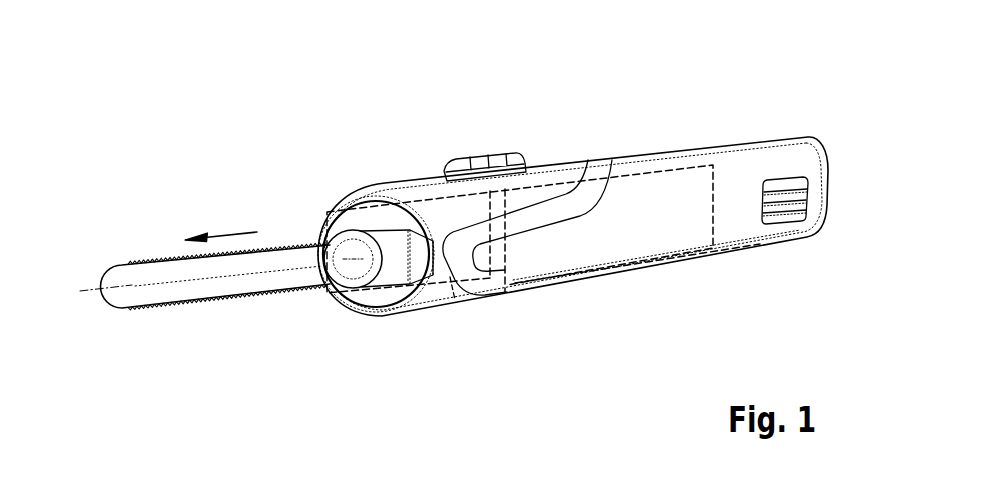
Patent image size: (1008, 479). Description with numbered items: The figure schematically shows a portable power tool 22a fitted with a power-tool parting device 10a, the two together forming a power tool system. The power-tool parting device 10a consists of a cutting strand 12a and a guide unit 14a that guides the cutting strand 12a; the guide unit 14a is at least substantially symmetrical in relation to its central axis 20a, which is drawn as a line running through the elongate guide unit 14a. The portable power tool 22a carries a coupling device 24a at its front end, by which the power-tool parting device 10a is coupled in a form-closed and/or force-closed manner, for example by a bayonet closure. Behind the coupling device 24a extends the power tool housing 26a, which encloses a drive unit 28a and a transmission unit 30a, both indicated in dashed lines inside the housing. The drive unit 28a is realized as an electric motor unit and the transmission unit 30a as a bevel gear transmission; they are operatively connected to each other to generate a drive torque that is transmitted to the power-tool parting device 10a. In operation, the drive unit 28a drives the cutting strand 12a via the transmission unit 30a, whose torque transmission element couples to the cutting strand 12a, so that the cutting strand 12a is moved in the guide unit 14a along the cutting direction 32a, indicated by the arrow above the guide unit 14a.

The power-tool parting device 10a is at (168, 205).
The cutting strand 12a is at (201, 302).
The guide unit 14a is at (262, 285).
The central axis 20a is at (90, 282).
The portable power tool 22a is at (713, 66).
The coupling device 24a is at (357, 335).
The power tool housing 26a is at (643, 158).
The drive unit 28a is at (612, 278).
The transmission unit 30a is at (452, 300).
The cutting direction 32a is at (229, 233).